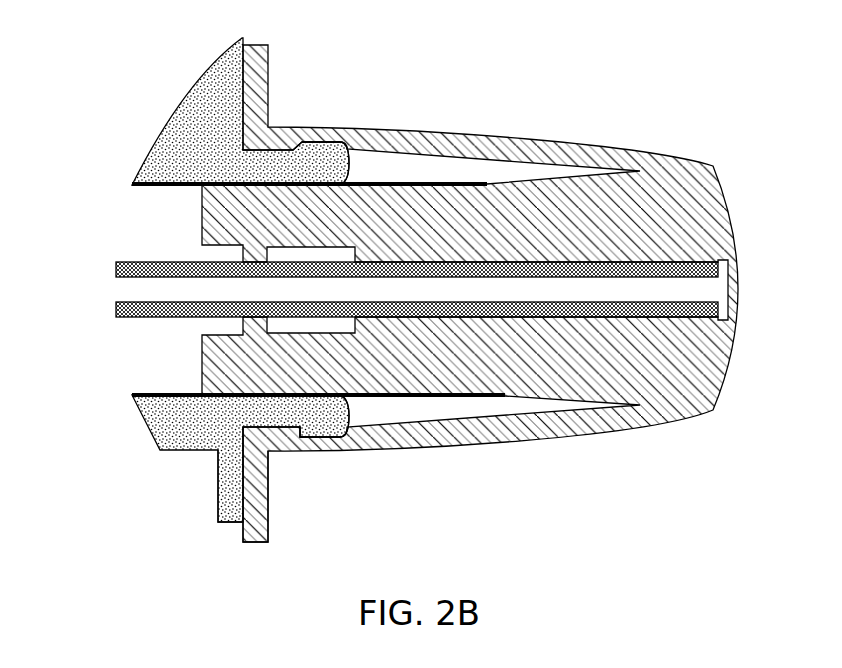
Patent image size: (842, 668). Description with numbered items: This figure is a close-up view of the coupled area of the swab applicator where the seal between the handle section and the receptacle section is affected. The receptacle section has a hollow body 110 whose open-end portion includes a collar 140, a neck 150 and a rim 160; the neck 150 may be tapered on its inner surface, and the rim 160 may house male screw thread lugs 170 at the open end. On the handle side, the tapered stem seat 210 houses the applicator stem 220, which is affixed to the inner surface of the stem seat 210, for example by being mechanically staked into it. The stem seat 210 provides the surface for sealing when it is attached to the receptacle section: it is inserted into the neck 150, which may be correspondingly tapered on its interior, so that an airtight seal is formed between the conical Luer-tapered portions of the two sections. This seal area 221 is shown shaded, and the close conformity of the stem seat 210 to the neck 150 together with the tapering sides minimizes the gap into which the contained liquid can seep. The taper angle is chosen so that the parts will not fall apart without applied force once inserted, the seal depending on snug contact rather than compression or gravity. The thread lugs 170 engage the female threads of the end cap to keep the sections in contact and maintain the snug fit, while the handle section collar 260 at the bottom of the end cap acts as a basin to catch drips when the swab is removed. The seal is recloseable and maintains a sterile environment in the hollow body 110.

The hollow body 110 is at (172, 130).
The collar 140 is at (218, 507).
The neck 150 is at (258, 407).
The rim 160 is at (343, 168).
The thread lugs 170 is at (322, 425).
The stem seat 210 is at (588, 365).
The applicator stem 220 is at (138, 302).
The seal area 221 is at (388, 173).
The collar 260 is at (263, 537).